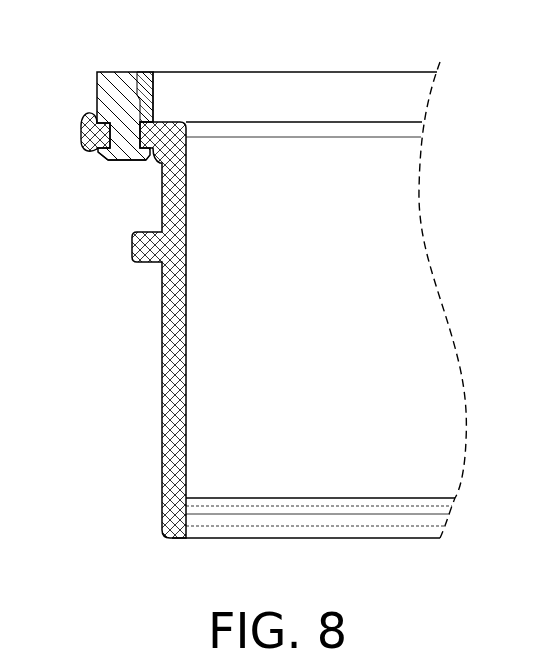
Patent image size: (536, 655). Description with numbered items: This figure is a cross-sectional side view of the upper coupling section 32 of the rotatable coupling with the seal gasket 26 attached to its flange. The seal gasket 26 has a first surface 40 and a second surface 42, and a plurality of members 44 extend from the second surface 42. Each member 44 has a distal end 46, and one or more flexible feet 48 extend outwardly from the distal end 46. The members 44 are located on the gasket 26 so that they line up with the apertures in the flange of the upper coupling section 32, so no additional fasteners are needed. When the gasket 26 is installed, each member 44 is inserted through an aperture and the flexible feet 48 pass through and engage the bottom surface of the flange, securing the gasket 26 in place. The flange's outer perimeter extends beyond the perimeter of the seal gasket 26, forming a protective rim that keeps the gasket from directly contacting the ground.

The seal gasket 26 is at (100, 88).
The upper coupling section 32 is at (161, 403).
The first surface 40 is at (127, 72).
The second surface 42 is at (88, 128).
The member 44 is at (140, 72).
The distal end 46 is at (125, 167).
The flexible foot 48 is at (100, 163).